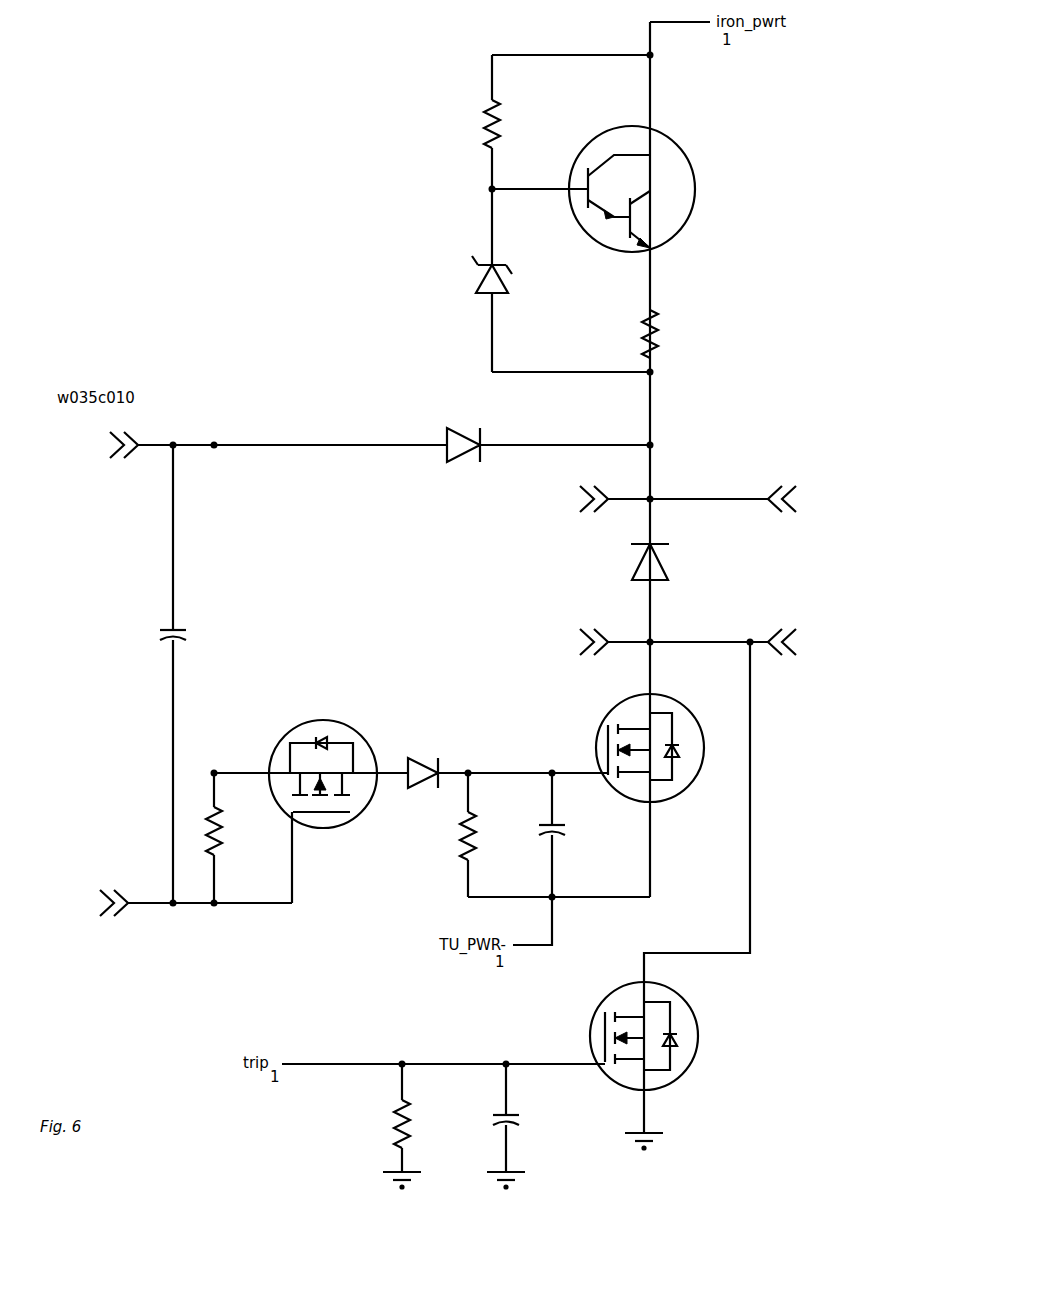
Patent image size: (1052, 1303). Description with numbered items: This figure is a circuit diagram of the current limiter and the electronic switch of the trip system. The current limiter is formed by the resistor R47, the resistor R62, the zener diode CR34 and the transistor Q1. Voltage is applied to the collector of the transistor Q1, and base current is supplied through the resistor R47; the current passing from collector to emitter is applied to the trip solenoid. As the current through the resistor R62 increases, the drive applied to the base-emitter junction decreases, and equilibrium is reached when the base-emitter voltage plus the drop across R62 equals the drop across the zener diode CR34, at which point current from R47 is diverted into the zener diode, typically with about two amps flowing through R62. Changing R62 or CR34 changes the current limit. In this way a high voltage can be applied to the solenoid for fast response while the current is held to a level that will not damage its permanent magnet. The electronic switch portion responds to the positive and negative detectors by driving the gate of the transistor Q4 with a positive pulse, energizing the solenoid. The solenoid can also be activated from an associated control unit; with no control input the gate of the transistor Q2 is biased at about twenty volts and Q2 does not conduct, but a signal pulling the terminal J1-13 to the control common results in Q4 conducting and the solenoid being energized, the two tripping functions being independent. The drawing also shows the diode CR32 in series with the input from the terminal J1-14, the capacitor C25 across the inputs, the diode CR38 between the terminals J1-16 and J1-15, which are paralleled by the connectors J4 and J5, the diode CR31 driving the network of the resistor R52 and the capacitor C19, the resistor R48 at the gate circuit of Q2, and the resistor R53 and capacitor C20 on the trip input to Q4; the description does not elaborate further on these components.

The resistor R47 is at (511, 122).
The zener diode CR34 is at (523, 280).
The transistor Q1 is at (660, 196).
The resistor R62 is at (668, 336).
The diode CR32 is at (464, 421).
The capacitor C25 is at (136, 674).
The diode CR38 is at (681, 562).
The transistor Q2 is at (340, 811).
The diode CR31 is at (424, 749).
The resistor R48 is at (239, 838).
The resistor R52 is at (493, 835).
The capacitor C19 is at (586, 835).
The transistor Q4 is at (688, 1066).
The resistor R53 is at (425, 1126).
The capacitor C20 is at (538, 1126).
The connector terminal J1-14 is at (99, 441).
The connector terminal J1-16 is at (568, 498).
The connector terminal J1-15 is at (568, 641).
The connector terminal J1-13 is at (80, 901).
The connector J4 is at (813, 497).
The connector J5 is at (809, 640).